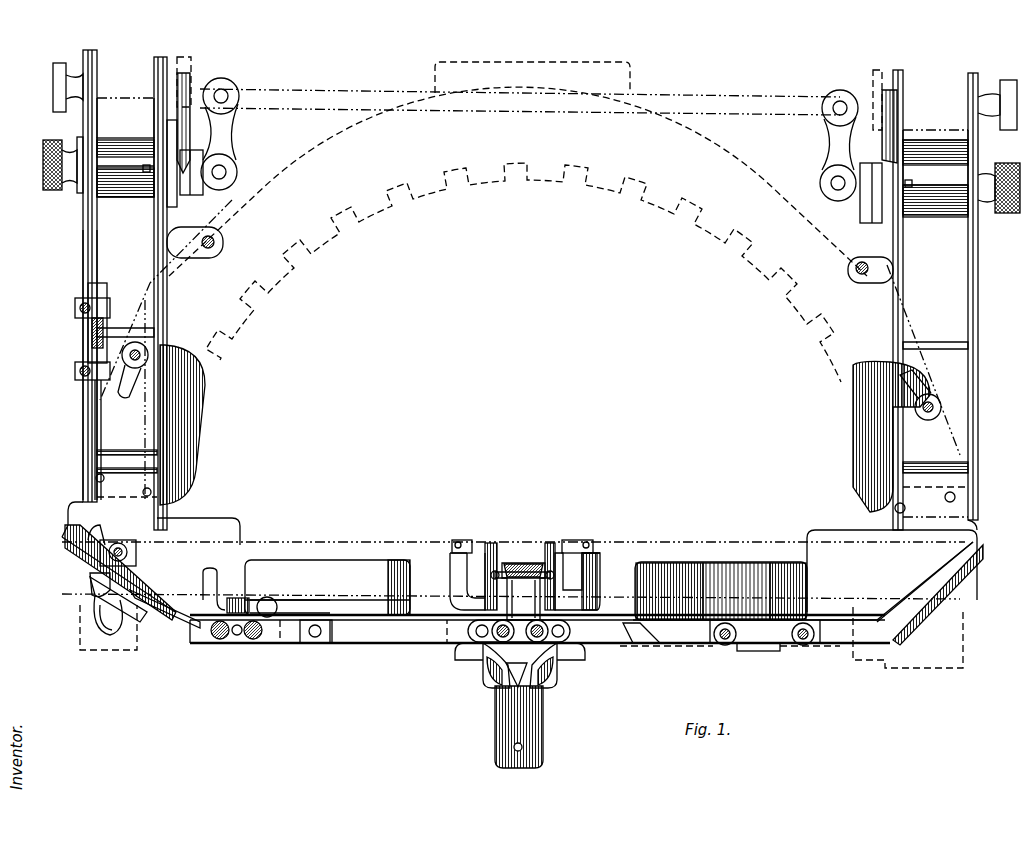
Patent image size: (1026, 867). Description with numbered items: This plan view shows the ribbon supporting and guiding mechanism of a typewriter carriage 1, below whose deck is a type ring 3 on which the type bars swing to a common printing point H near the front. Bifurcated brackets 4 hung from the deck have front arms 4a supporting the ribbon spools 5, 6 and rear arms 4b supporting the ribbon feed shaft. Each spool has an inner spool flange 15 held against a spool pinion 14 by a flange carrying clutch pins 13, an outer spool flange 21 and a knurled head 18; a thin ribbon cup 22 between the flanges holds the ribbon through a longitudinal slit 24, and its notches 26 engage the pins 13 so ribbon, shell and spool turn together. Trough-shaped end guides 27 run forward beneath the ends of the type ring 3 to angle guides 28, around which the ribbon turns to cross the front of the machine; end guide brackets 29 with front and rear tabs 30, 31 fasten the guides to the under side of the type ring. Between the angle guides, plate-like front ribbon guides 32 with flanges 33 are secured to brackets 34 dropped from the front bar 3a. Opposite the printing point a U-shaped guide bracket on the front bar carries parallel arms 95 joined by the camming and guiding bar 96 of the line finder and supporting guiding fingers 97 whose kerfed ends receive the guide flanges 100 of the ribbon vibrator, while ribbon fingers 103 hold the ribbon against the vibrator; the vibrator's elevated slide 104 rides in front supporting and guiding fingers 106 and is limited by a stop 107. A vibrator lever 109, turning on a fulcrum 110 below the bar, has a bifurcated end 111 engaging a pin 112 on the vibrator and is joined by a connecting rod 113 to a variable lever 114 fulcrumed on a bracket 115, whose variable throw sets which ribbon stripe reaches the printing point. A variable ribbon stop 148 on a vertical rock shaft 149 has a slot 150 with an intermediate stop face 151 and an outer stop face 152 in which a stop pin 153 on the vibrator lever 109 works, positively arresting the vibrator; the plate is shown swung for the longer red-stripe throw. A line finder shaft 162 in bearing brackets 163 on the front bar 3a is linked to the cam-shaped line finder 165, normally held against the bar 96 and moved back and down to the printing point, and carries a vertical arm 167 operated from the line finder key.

The typewriter carriage 1 is at (661, 210).
The type ring 3 is at (481, 186).
The front bar of the type ring 3a is at (639, 630).
The brackets 4 is at (205, 138).
The front arms 4a is at (226, 205).
The rear arms 4b is at (183, 73).
The ribbon spool 5 is at (83, 230).
The ribbon spool 6 is at (978, 263).
The clutch pins 13 is at (147, 172).
The spool pinion 14 is at (190, 196).
The inner spool flange 15 is at (157, 60).
The knurled head 18 is at (48, 147).
The outer spool flange 21 is at (978, 76).
The ribbon cup 22 is at (112, 165).
The longitudinal slit 24 is at (115, 165).
The notches 26 is at (143, 172).
The end guides 27 is at (97, 55).
The angle guides 28 is at (176, 621).
The end guide brackets 29 is at (207, 386).
The front tabs 30 is at (150, 350).
The rear tabs 31 is at (225, 240).
The front ribbon guides 32 is at (361, 560).
The flanges 33 is at (160, 615).
The brackets 34 is at (321, 644).
The parallel arms 95 is at (491, 548).
The camming and guiding bar 96 is at (518, 564).
The supporting guiding fingers 97 is at (452, 575).
The guide flanges 100 is at (455, 556).
The ribbon fingers 103 is at (462, 540).
The slide 104 is at (545, 728).
The front supporting and guiding fingers 106 is at (489, 686).
The stop 107 is at (514, 748).
The vibrator lever 109 is at (241, 600).
The fulcrum 110 is at (276, 600).
The bifurcated end 111 is at (513, 681).
The pin 112 is at (546, 660).
The connecting rod 113 is at (93, 414).
The variable lever 114 is at (75, 368).
The bracket 115 is at (75, 310).
The variable ribbon stop 148 is at (88, 578).
The vertical rock shaft 149 is at (120, 548).
The slot 150 is at (100, 615).
The stop face 151 is at (92, 600).
The stop face 152 is at (112, 631).
The stop pin 153 is at (130, 560).
The line finder shaft 162 is at (370, 612).
The bearing brackets 163 is at (242, 634).
The line finder 165 is at (533, 566).
The arm 167 is at (217, 560).
The printing point H is at (522, 523).